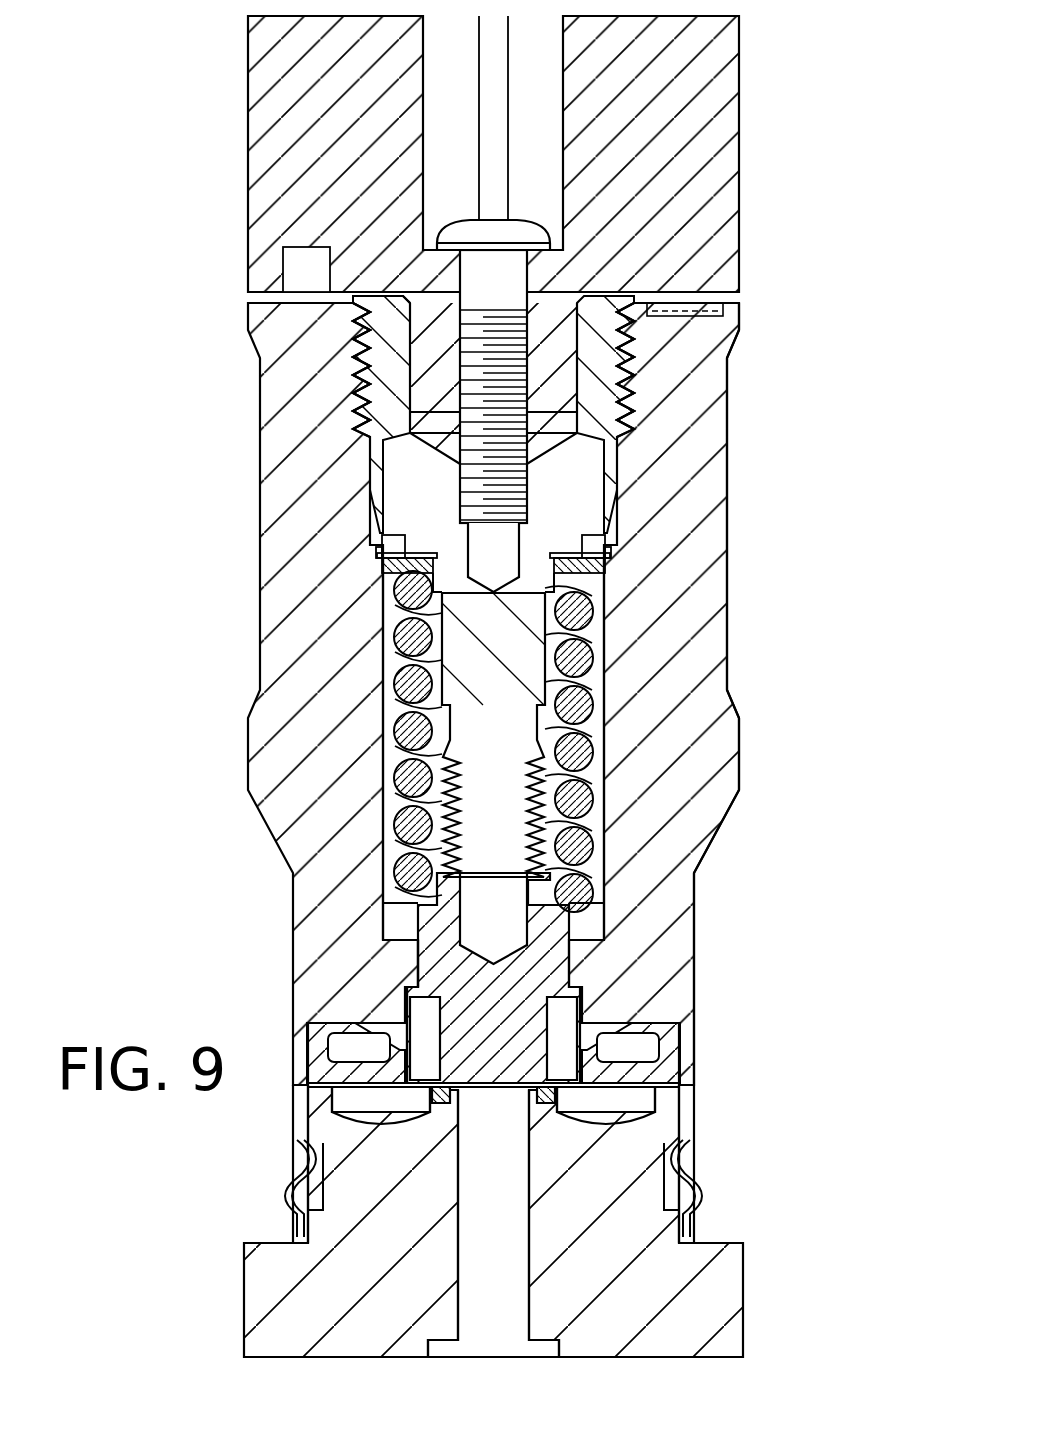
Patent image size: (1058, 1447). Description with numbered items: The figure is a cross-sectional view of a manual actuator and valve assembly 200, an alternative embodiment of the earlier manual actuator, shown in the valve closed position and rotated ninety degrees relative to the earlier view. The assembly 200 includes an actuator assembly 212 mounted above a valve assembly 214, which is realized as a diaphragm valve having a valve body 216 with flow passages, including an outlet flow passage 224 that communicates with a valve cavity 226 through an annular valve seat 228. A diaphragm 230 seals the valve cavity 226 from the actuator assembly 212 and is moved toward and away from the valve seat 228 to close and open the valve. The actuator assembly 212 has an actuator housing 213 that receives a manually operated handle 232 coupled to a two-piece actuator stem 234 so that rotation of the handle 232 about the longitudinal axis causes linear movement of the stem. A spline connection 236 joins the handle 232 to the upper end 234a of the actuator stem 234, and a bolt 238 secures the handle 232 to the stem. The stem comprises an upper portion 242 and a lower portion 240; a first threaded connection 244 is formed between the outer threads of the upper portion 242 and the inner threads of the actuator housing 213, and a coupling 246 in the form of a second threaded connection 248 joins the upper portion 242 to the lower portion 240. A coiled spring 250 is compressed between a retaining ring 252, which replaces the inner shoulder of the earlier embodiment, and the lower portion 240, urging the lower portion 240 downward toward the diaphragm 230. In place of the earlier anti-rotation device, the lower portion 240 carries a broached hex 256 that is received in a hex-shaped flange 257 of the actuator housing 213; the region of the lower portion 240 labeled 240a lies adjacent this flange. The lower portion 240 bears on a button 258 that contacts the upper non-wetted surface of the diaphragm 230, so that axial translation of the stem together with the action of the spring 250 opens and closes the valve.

The manual actuator and valve assembly 200 is at (780, 150).
The actuator assembly 212 is at (218, 656).
The actuator housing 213 is at (705, 485).
The valve assembly 214 is at (218, 1168).
The valve body 216 is at (722, 1285).
The outlet flow passage 224 is at (528, 1233).
The valve cavity 226 is at (632, 1098).
The annular valve seat 228 is at (457, 1097).
The diaphragm 230 is at (583, 1085).
The handle 232 is at (740, 237).
The actuator stem 234 is at (292, 541).
The upper end of actuator stem 234a is at (390, 302).
The spline connection 236 is at (565, 323).
The bolt 238 is at (470, 232).
The lower portion of actuator stem 240 is at (552, 935).
The piston flange 240a is at (427, 972).
The upper portion of actuator stem 242 is at (403, 462).
The first threaded connection 244 is at (345, 383).
The coupling 246 is at (392, 797).
The second threaded connection 248 is at (463, 780).
The spring 250 is at (598, 702).
The retaining ring 252 is at (602, 567).
The broached hex 256 is at (418, 957).
The hex-shaped flange 257 is at (585, 995).
The button 258 is at (572, 1018).